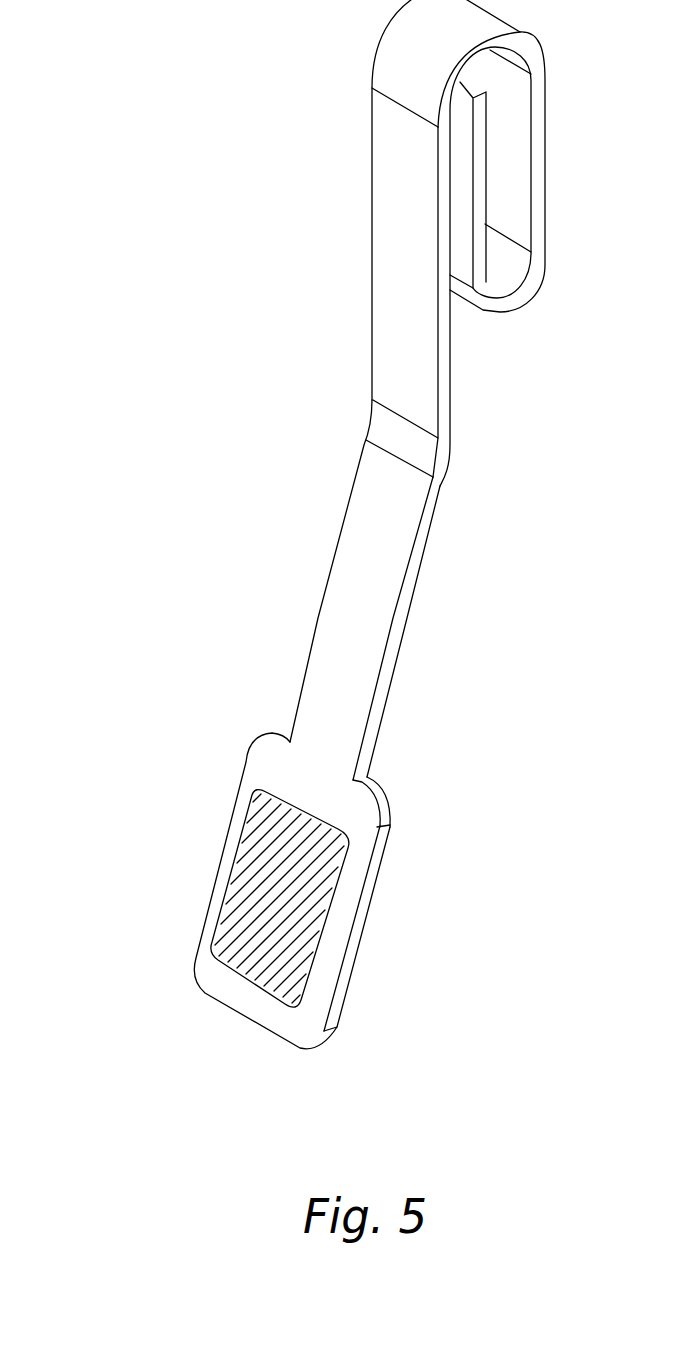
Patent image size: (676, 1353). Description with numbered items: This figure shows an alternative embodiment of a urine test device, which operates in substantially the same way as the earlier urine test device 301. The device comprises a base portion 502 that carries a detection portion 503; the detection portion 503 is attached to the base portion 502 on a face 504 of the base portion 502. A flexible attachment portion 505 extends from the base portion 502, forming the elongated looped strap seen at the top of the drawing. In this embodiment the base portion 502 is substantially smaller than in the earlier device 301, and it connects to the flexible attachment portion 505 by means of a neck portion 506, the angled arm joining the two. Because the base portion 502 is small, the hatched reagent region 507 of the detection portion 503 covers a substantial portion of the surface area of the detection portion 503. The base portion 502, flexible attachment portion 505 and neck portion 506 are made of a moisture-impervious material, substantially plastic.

The urine test device 301 is at (150, 115).
The base portion 502 is at (365, 803).
The detection portion 503 is at (313, 922).
The face 504 is at (246, 763).
The flexible attachment portion 505 is at (378, 235).
The neck portion 506 is at (402, 572).
The reagent region 507 is at (332, 880).